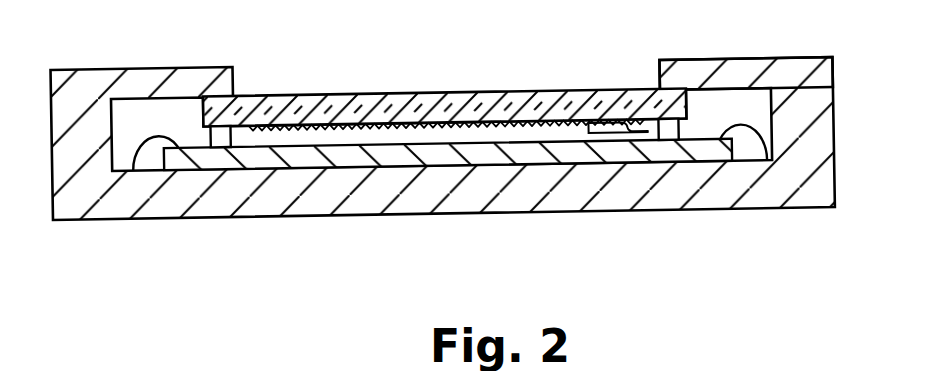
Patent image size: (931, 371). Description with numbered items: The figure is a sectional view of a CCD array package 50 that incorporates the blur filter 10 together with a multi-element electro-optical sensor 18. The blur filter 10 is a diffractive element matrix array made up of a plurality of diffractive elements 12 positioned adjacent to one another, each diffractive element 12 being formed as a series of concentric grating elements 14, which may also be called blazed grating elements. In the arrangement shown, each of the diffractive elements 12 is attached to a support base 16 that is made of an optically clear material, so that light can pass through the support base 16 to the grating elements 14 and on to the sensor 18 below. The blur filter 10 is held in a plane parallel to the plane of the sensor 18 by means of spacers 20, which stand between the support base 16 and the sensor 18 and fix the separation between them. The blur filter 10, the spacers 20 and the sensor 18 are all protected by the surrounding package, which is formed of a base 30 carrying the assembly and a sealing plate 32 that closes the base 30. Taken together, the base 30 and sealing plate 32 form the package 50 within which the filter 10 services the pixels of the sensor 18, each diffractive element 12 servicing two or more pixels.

The blur filter 10 is at (262, 138).
The diffractive element 12 is at (615, 162).
The concentric grating elements 14 is at (682, 160).
The support base 16 is at (428, 96).
The multi-element electro-optical sensor 18 is at (312, 152).
The spacers 20 is at (226, 142).
The base 30 is at (785, 188).
The sealing plate 32 is at (712, 58).
The package 50 is at (443, 150).